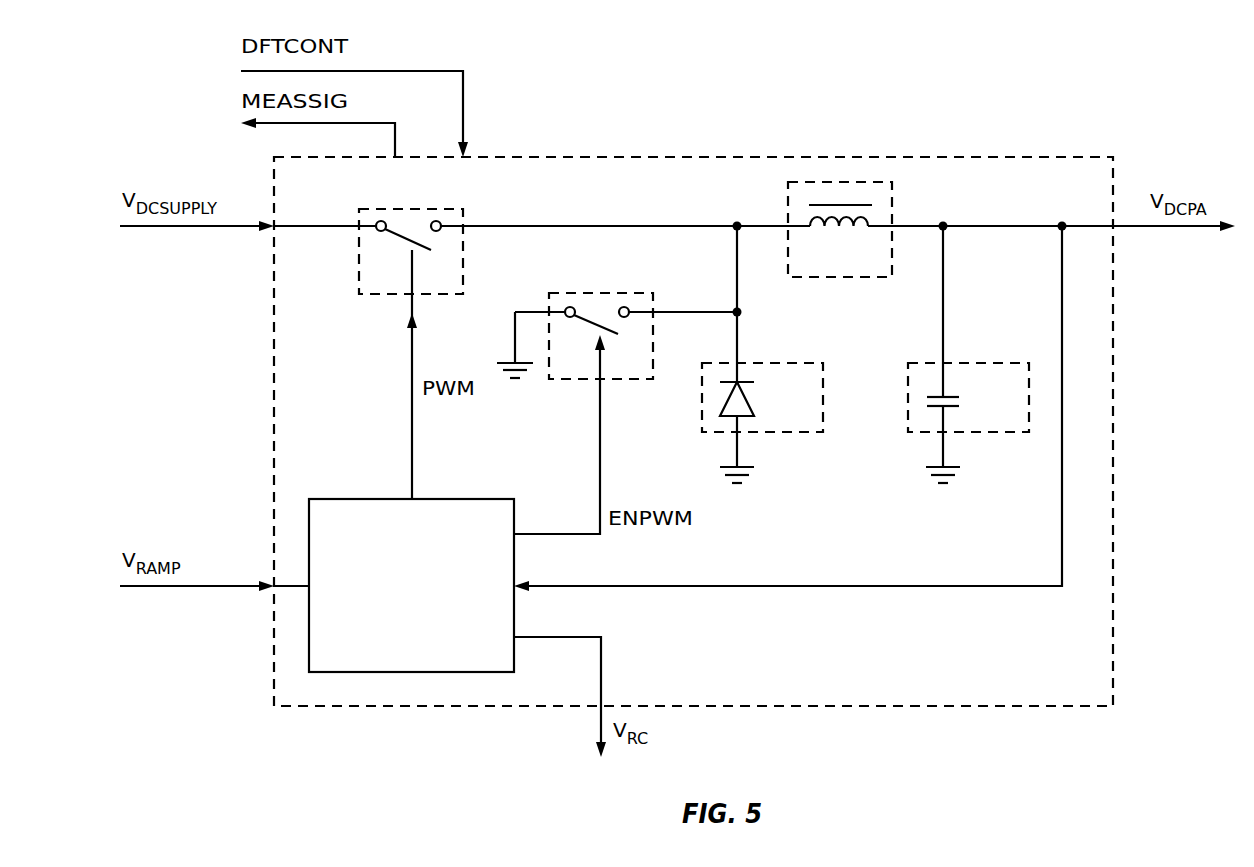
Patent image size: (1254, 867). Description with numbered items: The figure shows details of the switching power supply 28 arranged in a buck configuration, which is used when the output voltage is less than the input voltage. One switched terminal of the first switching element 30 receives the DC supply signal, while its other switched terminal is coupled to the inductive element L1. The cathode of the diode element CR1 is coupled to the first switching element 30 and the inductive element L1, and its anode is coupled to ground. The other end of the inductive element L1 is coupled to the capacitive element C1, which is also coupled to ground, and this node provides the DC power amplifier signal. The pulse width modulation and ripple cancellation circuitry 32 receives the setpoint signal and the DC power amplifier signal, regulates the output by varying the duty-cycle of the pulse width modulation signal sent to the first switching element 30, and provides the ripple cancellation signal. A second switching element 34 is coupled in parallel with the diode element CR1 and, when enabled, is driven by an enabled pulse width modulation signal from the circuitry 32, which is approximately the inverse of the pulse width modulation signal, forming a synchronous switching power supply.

The switching power supply 28 is at (1075, 693).
The first switching element 30 is at (452, 283).
The pulse width modulation and ripple cancellation circuitry 32 is at (426, 655).
The second switching element 34 is at (611, 367).
The inductive element L1 is at (829, 263).
The diode element CR1 is at (763, 407).
The capacitive element C1 is at (977, 407).